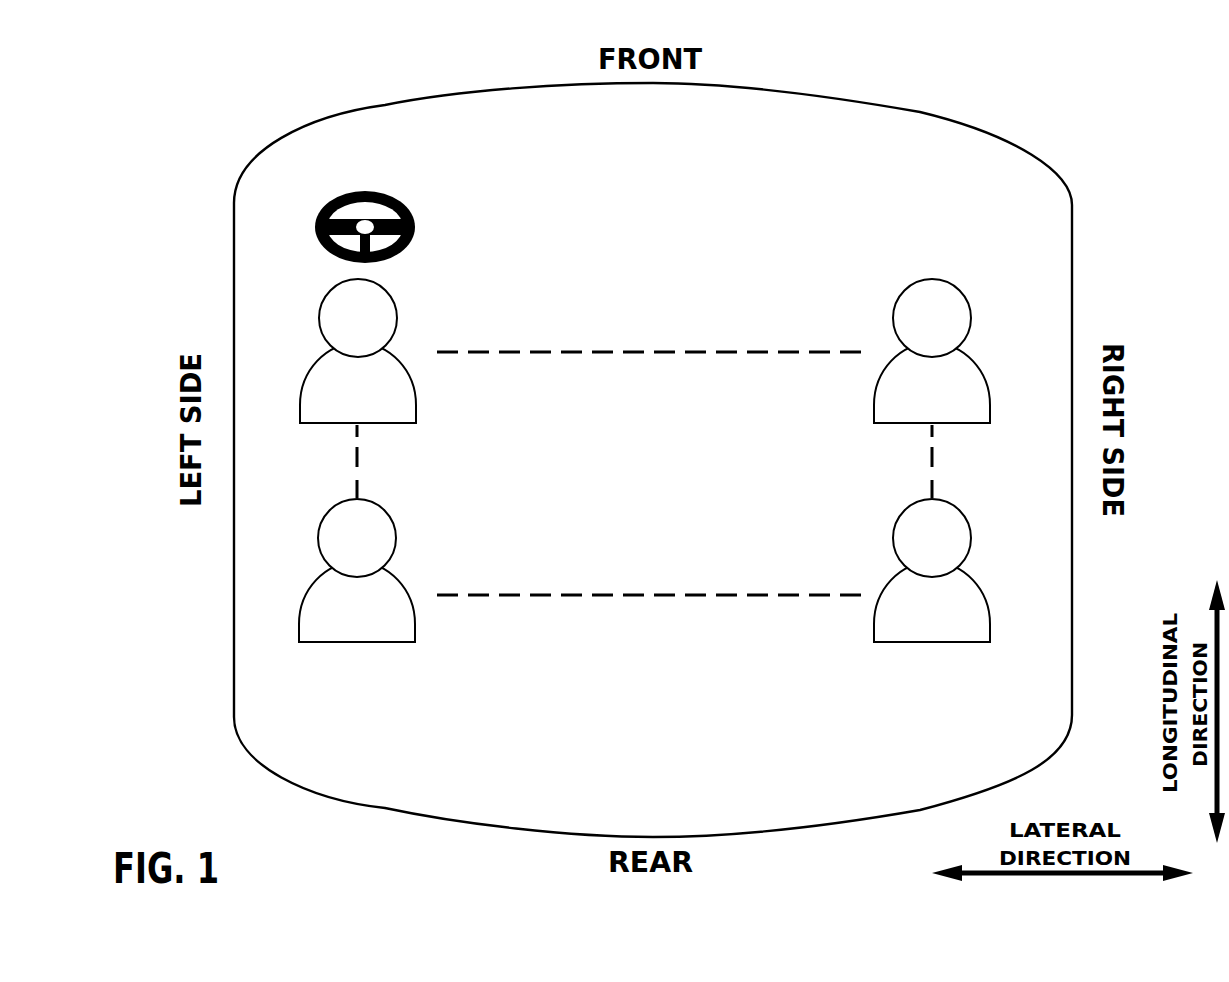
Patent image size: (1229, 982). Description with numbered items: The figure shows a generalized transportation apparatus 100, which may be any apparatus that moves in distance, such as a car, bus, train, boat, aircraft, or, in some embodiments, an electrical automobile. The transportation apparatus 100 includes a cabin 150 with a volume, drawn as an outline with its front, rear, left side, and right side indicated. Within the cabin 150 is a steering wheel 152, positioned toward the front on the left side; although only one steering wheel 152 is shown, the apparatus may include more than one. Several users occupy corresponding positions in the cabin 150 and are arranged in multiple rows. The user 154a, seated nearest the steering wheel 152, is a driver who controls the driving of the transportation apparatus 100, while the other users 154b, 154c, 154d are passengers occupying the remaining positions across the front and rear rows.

The transportation apparatus 100 is at (962, 123).
The cabin 150 is at (674, 126).
The steering wheel 152 is at (418, 227).
The user 154a is at (397, 310).
The user 154b is at (969, 300).
The user 154c is at (395, 527).
The user 154d is at (970, 525).